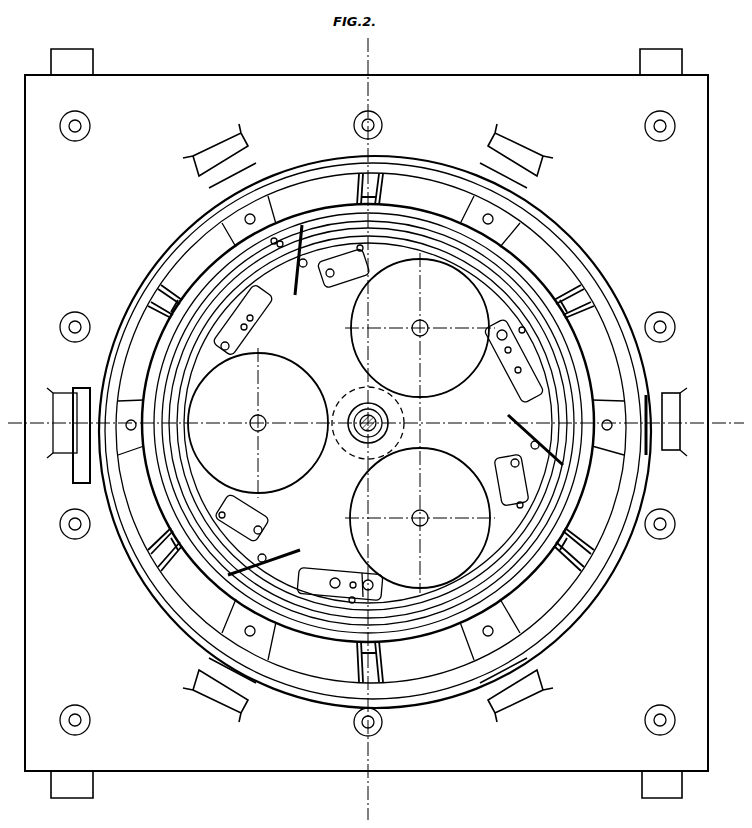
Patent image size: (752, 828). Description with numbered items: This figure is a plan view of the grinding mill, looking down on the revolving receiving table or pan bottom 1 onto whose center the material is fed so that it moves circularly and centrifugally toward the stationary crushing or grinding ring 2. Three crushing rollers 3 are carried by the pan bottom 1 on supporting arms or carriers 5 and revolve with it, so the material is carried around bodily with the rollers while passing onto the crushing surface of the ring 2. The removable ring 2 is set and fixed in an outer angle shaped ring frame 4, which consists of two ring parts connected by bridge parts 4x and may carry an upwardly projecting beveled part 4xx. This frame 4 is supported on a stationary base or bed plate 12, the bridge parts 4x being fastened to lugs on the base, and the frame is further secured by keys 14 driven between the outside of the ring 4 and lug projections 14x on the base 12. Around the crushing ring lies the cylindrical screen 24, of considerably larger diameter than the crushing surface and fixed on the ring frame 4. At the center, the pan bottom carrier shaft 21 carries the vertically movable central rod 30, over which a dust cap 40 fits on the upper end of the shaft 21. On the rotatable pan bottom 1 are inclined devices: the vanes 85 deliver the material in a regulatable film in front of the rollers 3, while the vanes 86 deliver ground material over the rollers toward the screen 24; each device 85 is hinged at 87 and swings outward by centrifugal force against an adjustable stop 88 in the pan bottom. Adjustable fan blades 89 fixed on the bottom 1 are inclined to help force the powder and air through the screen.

The revolving receiving table or pan bottom 1 is at (368, 423).
The crushing or grinding ring 2 is at (268, 262).
The crushing rollers 3 is at (339, 423).
The outer angle shaped ring frame 4 is at (175, 330).
The bridge parts 4x is at (127, 450).
The upwardly projecting part 4xx is at (202, 300).
The supporting arms or carriers 5 is at (264, 428).
The stationary base or bed plate 12 is at (366, 423).
The keys 14 is at (60, 407).
The lug projections 14x is at (525, 152).
The pan bottom carrier shaft 21 is at (383, 421).
The cylindrical screen 24 is at (165, 376).
The central rod 30 is at (362, 434).
The dust cap 40 is at (358, 412).
The inclined device or vane 85 is at (371, 395).
The inclined device or vane 86 is at (250, 328).
The hinge 87 is at (328, 278).
The adjustable or regulatable stop 88 is at (363, 250).
The adjustable fan blade 89 is at (531, 447).